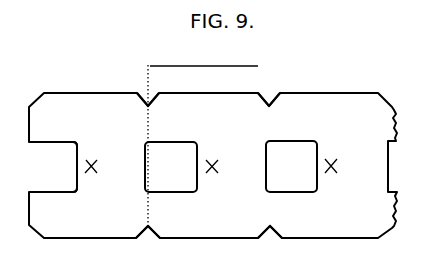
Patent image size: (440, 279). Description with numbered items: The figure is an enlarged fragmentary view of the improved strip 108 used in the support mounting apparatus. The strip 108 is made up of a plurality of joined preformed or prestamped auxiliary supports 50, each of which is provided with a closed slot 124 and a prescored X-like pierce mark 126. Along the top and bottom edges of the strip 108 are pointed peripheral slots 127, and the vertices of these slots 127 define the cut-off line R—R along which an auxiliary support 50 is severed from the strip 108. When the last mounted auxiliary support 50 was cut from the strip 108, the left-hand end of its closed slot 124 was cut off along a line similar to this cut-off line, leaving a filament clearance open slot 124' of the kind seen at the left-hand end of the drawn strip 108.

The strip 108 is at (333, 105).
The closed slot 124 is at (231, 173).
The filament clearance open slot 124' is at (52, 167).
The pierce mark 126 is at (89, 163).
The pointed peripheral slots 127 is at (142, 97).
The auxiliary support 50 is at (101, 231).